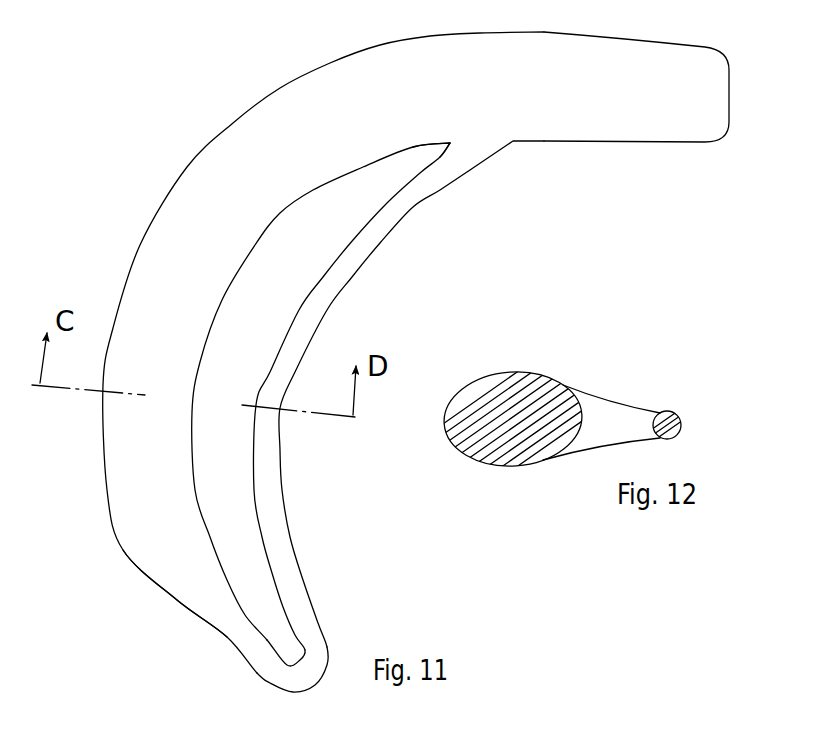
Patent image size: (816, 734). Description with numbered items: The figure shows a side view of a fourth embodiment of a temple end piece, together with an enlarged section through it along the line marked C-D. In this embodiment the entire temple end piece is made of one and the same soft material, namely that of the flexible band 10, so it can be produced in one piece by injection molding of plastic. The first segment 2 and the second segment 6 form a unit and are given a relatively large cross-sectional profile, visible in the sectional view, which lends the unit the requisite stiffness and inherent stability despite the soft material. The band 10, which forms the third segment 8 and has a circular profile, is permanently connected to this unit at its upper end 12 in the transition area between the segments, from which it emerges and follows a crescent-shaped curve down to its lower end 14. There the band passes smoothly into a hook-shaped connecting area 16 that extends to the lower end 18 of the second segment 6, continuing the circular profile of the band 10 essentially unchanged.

In FIG. 11, the first segment 2 is at (568, 152).
In FIG. 11, the second segment 6 is at (219, 98).
In FIG. 12, the second segment 6 is at (520, 361).
In FIG. 11, the third segment 8 is at (354, 302).
In FIG. 11, the flexible band 10 is at (288, 358).
In FIG. 12, the flexible band 10 is at (680, 417).
In FIG. 11, the upper end of band 12 is at (460, 158).
In FIG. 11, the lower end of band 14 is at (296, 608).
In FIG. 11, the hook-shaped connecting area 16 is at (248, 679).
In FIG. 11, the lower end of second segment 18 is at (178, 580).